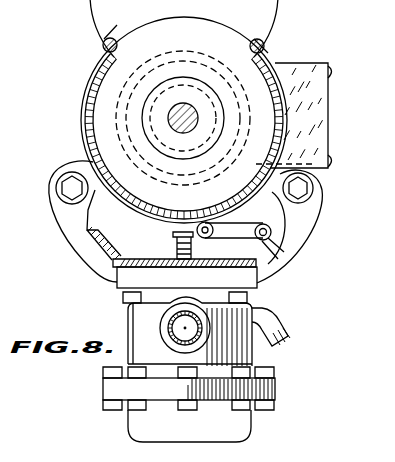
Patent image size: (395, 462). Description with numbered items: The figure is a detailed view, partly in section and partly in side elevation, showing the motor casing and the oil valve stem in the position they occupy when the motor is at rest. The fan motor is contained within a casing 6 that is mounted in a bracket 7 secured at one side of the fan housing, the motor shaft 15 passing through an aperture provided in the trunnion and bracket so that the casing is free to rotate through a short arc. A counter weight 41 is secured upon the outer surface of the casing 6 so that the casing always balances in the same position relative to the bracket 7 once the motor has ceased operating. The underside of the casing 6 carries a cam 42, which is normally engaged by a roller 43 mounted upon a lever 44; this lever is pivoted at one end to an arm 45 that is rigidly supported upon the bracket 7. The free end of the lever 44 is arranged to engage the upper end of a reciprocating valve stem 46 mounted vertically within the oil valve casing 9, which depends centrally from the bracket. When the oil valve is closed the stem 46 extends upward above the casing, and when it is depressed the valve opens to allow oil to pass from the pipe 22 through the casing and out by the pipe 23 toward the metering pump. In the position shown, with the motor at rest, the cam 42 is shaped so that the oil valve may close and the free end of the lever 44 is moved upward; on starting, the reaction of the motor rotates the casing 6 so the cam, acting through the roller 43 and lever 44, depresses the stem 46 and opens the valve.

The motor casing 6 is at (268, 55).
The counter weight 41 is at (321, 94).
The motor shaft 15 is at (178, 132).
The bracket 7 is at (312, 220).
The cam 42 is at (151, 212).
The roller 43 is at (210, 244).
The lever 44 is at (226, 236).
The arm 45 is at (274, 258).
The valve stem 46 is at (177, 244).
The pipe 22 is at (172, 326).
The pipe 23 is at (272, 316).
The oil valve casing 9 is at (258, 356).